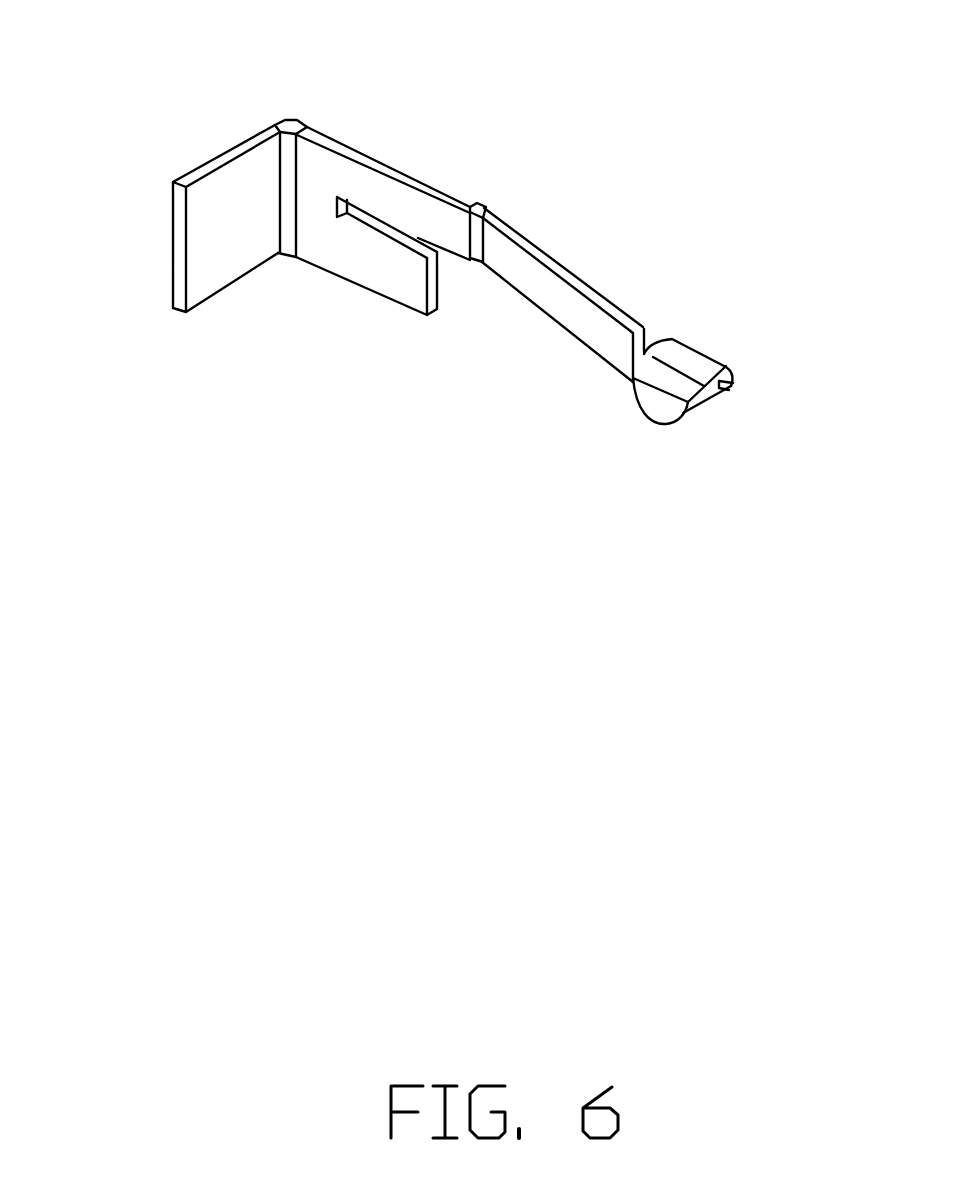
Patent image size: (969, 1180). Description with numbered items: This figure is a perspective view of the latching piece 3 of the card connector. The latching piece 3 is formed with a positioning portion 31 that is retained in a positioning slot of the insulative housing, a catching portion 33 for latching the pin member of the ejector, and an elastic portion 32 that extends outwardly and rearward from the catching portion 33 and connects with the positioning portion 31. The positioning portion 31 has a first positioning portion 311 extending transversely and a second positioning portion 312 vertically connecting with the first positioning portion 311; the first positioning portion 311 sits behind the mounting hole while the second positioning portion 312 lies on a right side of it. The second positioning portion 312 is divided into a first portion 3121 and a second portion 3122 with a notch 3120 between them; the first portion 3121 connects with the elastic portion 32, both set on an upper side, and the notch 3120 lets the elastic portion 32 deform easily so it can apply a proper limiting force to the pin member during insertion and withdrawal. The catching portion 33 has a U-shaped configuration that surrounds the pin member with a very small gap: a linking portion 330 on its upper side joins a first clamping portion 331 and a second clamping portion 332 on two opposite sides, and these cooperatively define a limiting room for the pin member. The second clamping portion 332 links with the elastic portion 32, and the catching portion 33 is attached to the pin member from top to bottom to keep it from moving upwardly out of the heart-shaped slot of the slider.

The latching piece 3 is at (535, 180).
The positioning portion 31 is at (222, 218).
The first positioning portion 311 is at (255, 165).
The second positioning portion 312 is at (322, 170).
The notch 3120 is at (458, 250).
The first portion 3121 is at (397, 200).
The second portion 3122 is at (358, 258).
The elastic portion 32 is at (557, 295).
The catching portion 33 is at (653, 372).
The linking portion 330 is at (683, 357).
The first clamping portion 331 is at (668, 410).
The second clamping portion 332 is at (717, 398).